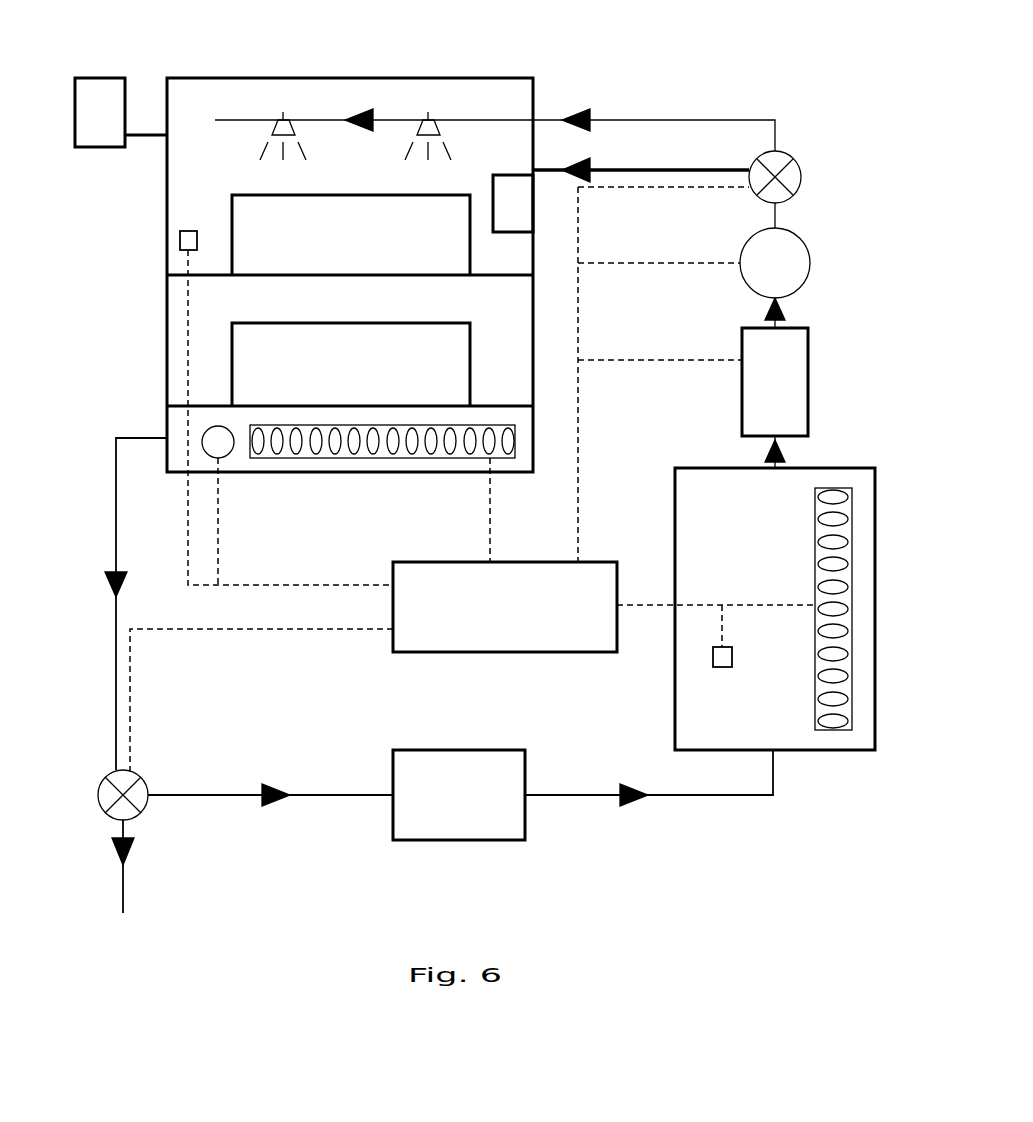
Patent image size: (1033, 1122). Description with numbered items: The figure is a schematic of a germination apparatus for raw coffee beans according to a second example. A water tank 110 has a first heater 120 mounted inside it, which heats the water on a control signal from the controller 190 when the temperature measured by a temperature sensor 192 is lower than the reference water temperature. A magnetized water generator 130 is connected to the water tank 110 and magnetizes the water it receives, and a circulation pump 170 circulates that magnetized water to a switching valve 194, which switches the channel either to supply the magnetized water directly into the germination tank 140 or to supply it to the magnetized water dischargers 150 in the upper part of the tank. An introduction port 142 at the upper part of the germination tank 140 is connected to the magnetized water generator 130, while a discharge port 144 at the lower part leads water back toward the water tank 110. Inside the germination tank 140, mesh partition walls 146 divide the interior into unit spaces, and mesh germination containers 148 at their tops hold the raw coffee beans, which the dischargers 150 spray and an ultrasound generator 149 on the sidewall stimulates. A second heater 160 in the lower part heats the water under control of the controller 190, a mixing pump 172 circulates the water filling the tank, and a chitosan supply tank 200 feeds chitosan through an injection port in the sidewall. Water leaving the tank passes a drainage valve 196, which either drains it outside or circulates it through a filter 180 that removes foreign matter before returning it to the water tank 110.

The water tank 110 is at (825, 468).
The first heater 120 is at (850, 573).
The magnetized water generator 130 is at (795, 330).
The germination tank 140 is at (228, 78).
The introduction port 142 is at (534, 170).
The discharge port 144 is at (158, 437).
The partition walls 146 is at (167, 272).
The germination containers 148 is at (228, 210).
The ultrasound generator 149 is at (509, 175).
The magnetized water dischargers 150 is at (283, 120).
The second heater 160 is at (270, 425).
The circulation pump 170 is at (803, 240).
The mixing pump 172 is at (208, 425).
The filter 180 is at (462, 750).
The controller 190 is at (422, 562).
The temperature sensor 192 is at (180, 236).
The switching valve 194 is at (793, 160).
The drainage valve 196 is at (148, 770).
The chitosan supply tank 200 is at (102, 77).